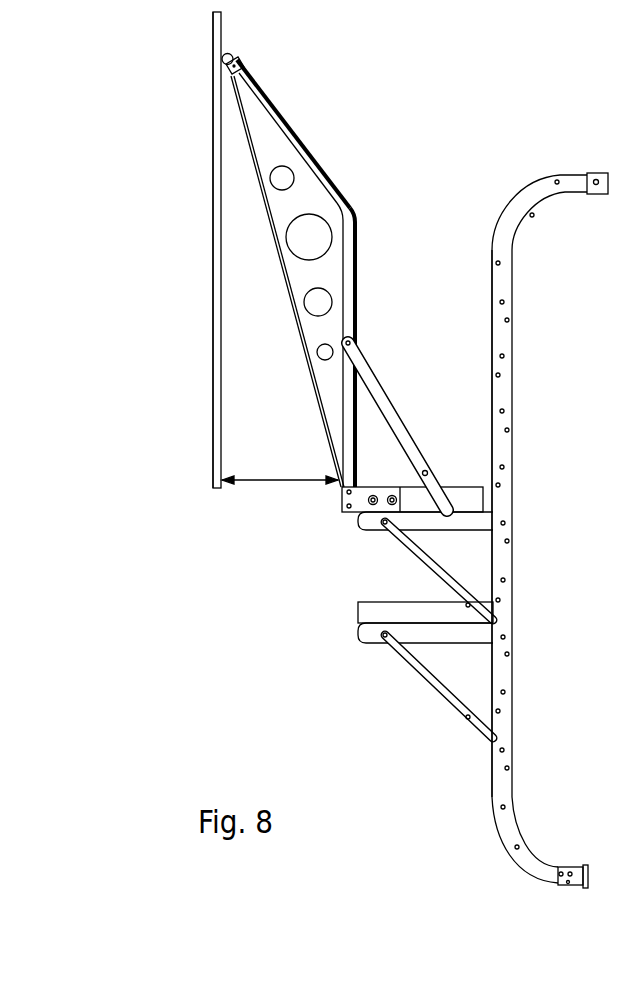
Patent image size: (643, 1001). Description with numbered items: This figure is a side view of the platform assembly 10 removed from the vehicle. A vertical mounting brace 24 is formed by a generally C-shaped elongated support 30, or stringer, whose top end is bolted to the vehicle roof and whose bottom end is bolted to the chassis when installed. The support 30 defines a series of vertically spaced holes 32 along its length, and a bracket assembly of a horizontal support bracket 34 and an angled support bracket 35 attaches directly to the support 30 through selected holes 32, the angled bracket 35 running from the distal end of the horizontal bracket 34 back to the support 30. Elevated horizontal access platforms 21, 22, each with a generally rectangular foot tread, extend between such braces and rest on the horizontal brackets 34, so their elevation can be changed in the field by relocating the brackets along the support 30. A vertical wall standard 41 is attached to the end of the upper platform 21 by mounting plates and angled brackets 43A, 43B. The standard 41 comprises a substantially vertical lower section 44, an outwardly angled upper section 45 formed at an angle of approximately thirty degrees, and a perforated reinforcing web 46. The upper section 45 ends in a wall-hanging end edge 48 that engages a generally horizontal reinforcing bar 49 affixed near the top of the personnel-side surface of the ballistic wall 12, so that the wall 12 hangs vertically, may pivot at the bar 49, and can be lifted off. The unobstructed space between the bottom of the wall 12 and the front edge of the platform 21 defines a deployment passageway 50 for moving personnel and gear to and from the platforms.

The platform assembly 10 is at (123, 182).
The ballistic wall 12 is at (214, 300).
The access platform 21 is at (467, 486).
The access platform 22 is at (370, 600).
The vertical mounting brace 24 is at (512, 332).
The elongated support 30 is at (512, 452).
The holes 32 is at (506, 523).
The horizontal support bracket 34 is at (360, 628).
The angled support bracket 35 is at (420, 670).
The vertical wall standard 41 is at (322, 165).
The angled bracket 43A is at (342, 502).
The angled bracket 43B is at (400, 422).
The lower section 44 is at (358, 250).
The upper section 45 is at (290, 128).
The perforated reinforcing web 46 is at (302, 272).
The wall-hanging end edge 48 is at (222, 72).
The reinforcing bar 49 is at (232, 52).
The deployment passageway 50 is at (273, 482).